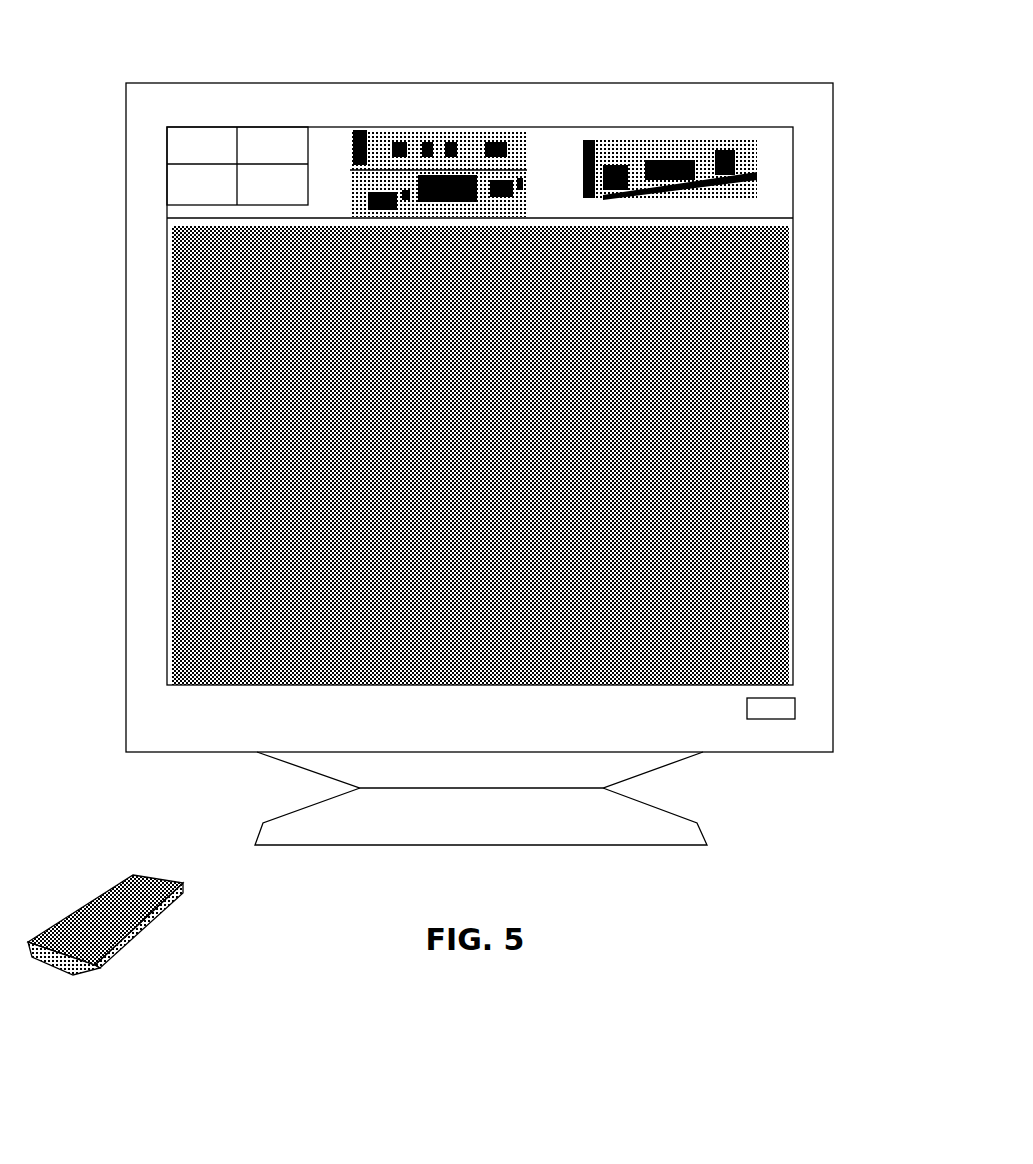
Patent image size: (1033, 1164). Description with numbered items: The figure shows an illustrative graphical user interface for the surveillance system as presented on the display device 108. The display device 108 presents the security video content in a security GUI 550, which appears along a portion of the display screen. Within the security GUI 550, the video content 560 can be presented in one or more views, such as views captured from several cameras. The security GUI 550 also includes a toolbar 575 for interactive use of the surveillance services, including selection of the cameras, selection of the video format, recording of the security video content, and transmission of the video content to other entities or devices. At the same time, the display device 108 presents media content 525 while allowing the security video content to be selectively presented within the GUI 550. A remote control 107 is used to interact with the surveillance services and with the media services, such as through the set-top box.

The display device 108 is at (460, 729).
The toolbar 575 is at (234, 140).
The security GUI 550 is at (537, 113).
The video content 560 is at (673, 152).
The media content 525 is at (763, 362).
The remote control 107 is at (125, 932).